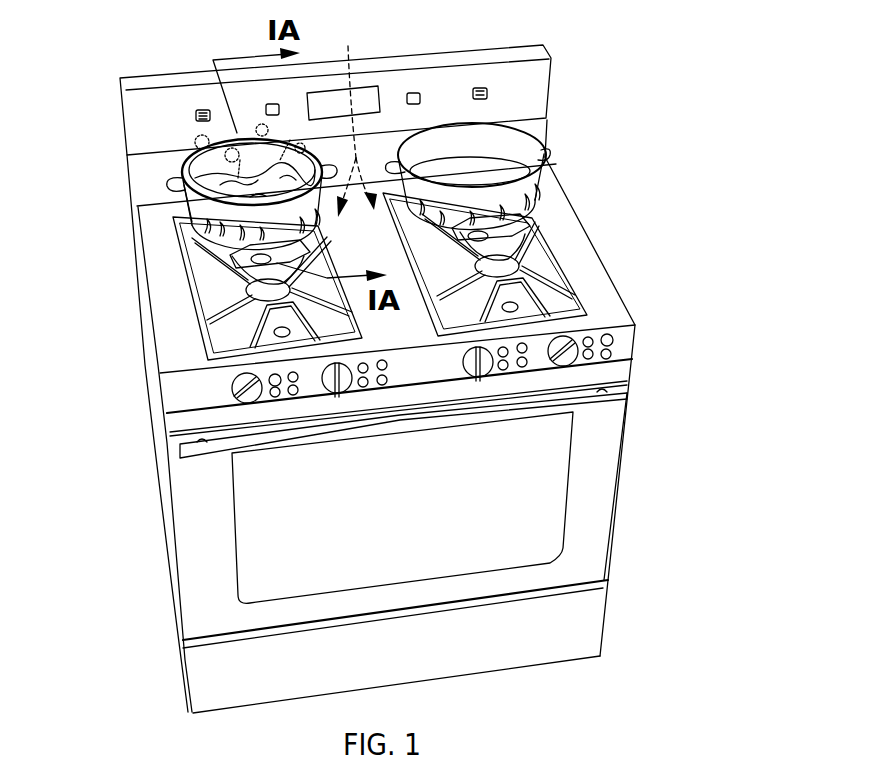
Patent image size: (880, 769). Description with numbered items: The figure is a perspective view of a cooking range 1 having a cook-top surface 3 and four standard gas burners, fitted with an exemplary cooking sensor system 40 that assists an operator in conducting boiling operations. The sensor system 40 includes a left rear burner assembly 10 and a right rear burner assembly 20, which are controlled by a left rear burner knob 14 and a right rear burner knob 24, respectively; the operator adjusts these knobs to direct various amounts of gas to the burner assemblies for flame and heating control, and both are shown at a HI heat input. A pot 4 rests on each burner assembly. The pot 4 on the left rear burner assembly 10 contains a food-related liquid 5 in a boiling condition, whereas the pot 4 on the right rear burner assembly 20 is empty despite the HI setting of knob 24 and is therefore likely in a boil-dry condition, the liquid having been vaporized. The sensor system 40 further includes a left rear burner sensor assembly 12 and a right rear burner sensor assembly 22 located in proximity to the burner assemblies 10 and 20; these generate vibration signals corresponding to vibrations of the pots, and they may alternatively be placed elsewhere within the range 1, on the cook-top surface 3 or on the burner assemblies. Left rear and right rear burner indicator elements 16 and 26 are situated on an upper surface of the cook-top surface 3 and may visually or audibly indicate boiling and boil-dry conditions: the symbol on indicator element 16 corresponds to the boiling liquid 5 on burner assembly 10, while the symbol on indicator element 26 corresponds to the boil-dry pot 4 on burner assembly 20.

The cooking range 1 is at (640, 133).
The cook-top surface 3 is at (180, 352).
The pot 4 is at (190, 167).
The food-related liquid 5 is at (188, 182).
The left rear burner assembly 10 is at (168, 240).
The left rear burner sensor assembly 12 is at (268, 256).
The left rear burner knob 14 is at (237, 400).
The left rear burner indicator element 16 is at (197, 120).
The right rear burner assembly 20 is at (562, 228).
The right rear burner sensor assembly 22 is at (477, 230).
The right rear burner knob 24 is at (576, 353).
The right rear burner indicator element 26 is at (487, 95).
The sensor system 40 is at (352, 119).